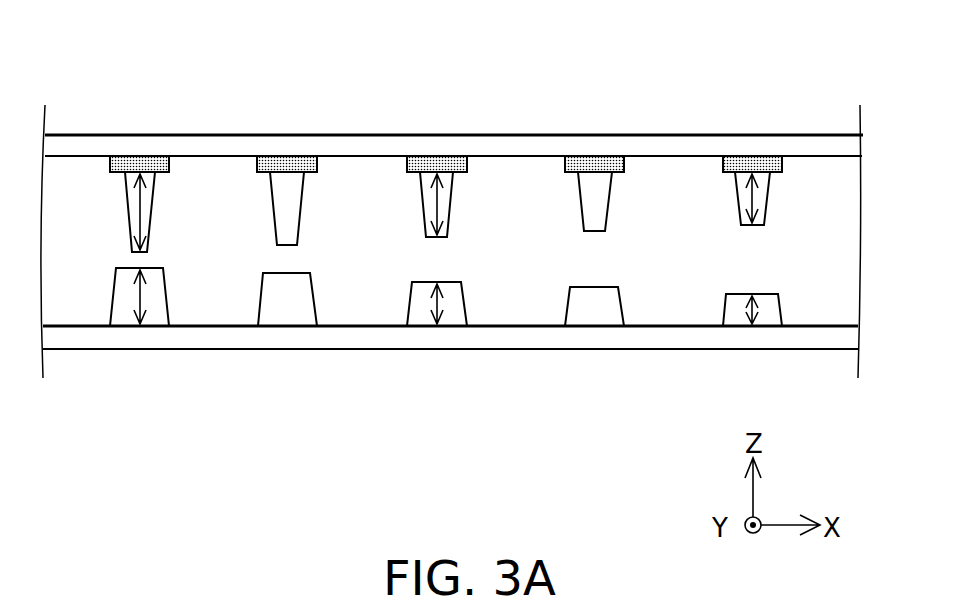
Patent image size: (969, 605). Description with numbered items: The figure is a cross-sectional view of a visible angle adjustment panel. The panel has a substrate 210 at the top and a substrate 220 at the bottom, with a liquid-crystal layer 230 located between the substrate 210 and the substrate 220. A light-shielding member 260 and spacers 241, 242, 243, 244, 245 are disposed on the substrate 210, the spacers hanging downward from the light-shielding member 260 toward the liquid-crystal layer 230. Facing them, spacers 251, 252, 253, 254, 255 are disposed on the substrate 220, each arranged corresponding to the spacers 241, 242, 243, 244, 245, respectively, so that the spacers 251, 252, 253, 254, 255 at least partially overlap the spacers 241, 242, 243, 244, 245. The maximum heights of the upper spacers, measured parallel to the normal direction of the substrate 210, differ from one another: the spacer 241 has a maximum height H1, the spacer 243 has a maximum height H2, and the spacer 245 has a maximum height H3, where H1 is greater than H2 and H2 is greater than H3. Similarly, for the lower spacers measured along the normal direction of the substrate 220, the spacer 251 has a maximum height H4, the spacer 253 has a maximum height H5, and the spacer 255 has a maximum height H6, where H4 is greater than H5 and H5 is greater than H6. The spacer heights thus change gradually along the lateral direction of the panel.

The substrate 210 is at (548, 145).
The substrate 220 is at (205, 338).
The liquid-crystal layer 230 is at (230, 188).
The spacer 241 is at (146, 205).
The spacer 242 is at (290, 207).
The spacer 243 is at (447, 203).
The spacer 244 is at (595, 200).
The spacer 245 is at (763, 197).
The spacer 251 is at (125, 313).
The spacer 252 is at (287, 303).
The spacer 253 is at (420, 312).
The spacer 254 is at (593, 313).
The spacer 255 is at (733, 315).
The light-shielding member 260 is at (744, 165).
The maximum height H1 is at (142, 203).
The maximum height H2 is at (437, 202).
The maximum height H3 is at (753, 195).
The maximum height H4 is at (147, 300).
The maximum height H5 is at (438, 307).
The maximum height H6 is at (760, 313).